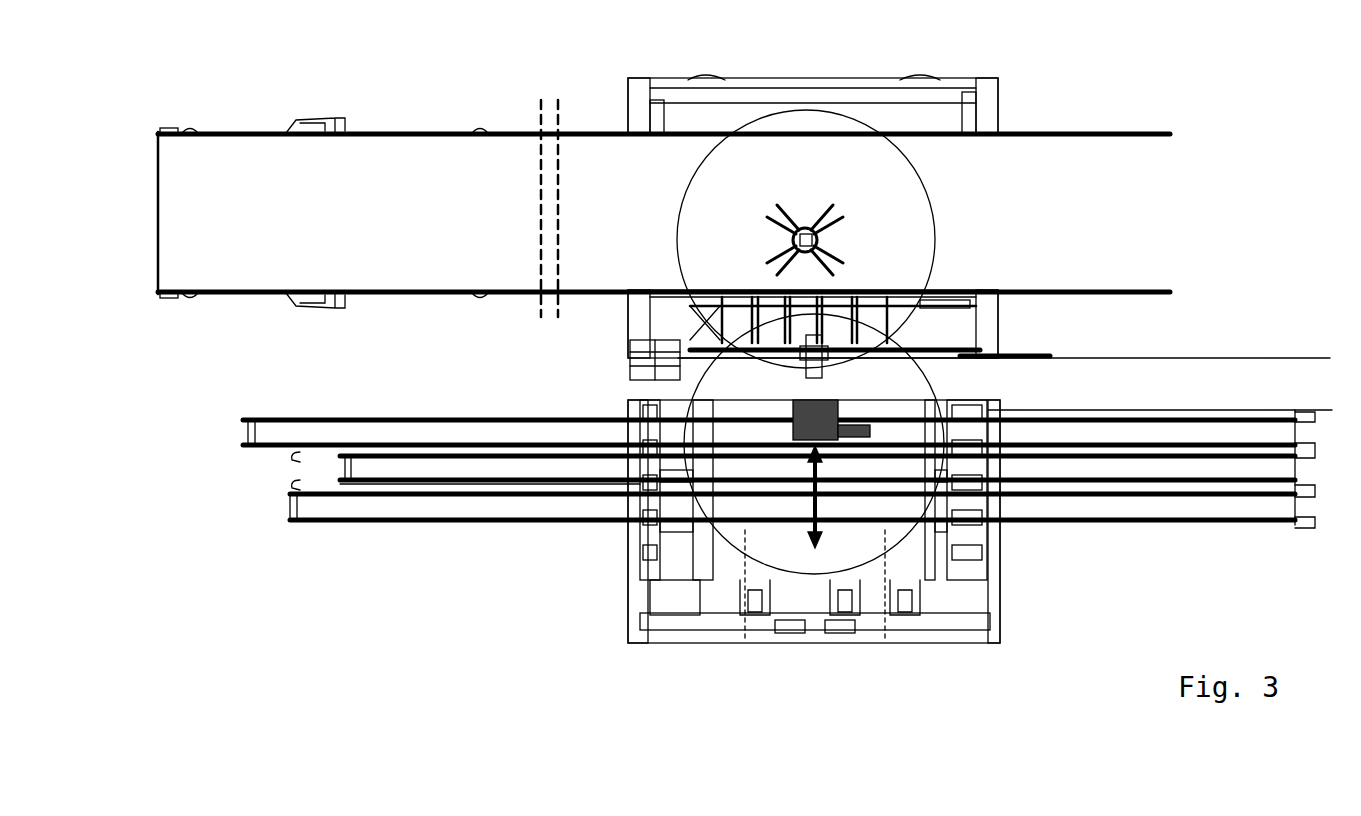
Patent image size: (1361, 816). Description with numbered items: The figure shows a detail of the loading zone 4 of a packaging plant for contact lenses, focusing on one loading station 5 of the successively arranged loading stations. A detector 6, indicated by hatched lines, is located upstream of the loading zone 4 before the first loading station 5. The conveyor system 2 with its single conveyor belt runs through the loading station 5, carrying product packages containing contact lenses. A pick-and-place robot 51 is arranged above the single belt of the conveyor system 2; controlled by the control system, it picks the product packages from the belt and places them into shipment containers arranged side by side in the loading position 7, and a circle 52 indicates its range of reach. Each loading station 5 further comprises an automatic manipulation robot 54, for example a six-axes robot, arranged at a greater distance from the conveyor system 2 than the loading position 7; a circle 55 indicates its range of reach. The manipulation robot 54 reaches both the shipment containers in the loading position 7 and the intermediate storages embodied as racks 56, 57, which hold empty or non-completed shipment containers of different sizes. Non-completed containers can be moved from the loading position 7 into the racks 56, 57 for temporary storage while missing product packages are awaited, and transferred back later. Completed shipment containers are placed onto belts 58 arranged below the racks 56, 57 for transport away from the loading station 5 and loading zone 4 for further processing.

The conveyor system 2 is at (430, 157).
The loading zone 4 is at (1152, 58).
The loading station 5 is at (987, 685).
The detector 6 is at (550, 112).
The loading position 7 is at (682, 310).
The pick-and-place robot 51 is at (808, 232).
The circle 52 is at (928, 203).
The automatic manipulation robot 54 is at (802, 440).
The circle 55 is at (849, 573).
The rack 56 is at (624, 552).
The rack 57 is at (1008, 556).
The belts 58 is at (1092, 433).